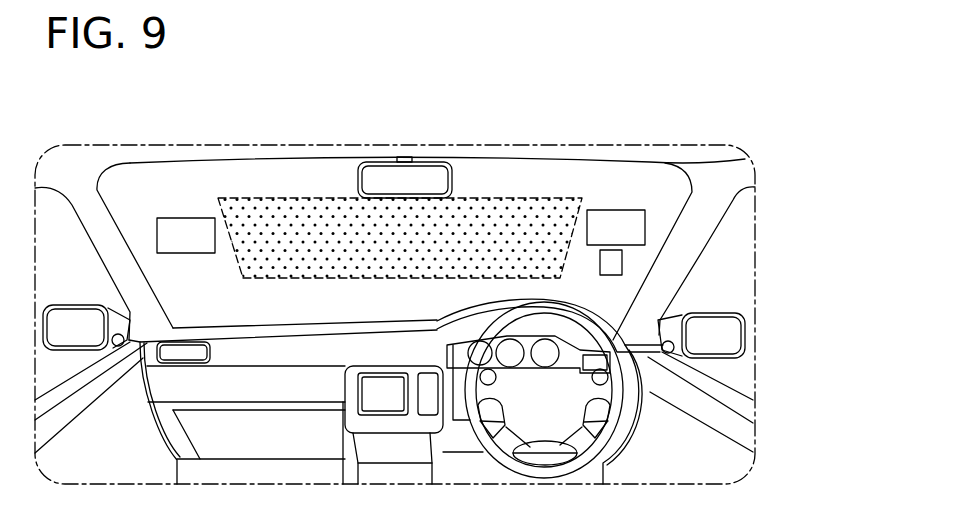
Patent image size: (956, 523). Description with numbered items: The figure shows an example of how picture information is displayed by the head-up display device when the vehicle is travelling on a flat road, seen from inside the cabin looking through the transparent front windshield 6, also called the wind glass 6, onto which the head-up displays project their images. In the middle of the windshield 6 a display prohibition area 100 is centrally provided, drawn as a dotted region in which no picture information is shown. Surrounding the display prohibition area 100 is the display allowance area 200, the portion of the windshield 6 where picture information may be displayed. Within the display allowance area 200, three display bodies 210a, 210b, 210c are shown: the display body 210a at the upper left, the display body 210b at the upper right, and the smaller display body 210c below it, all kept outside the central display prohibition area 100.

The front windshield 6 is at (745, 159).
The display prohibition area 100 is at (538, 198).
The display allowance area 200 is at (233, 177).
The display body 210a is at (180, 218).
The display body 210b is at (622, 210).
The display body 210c is at (623, 262).